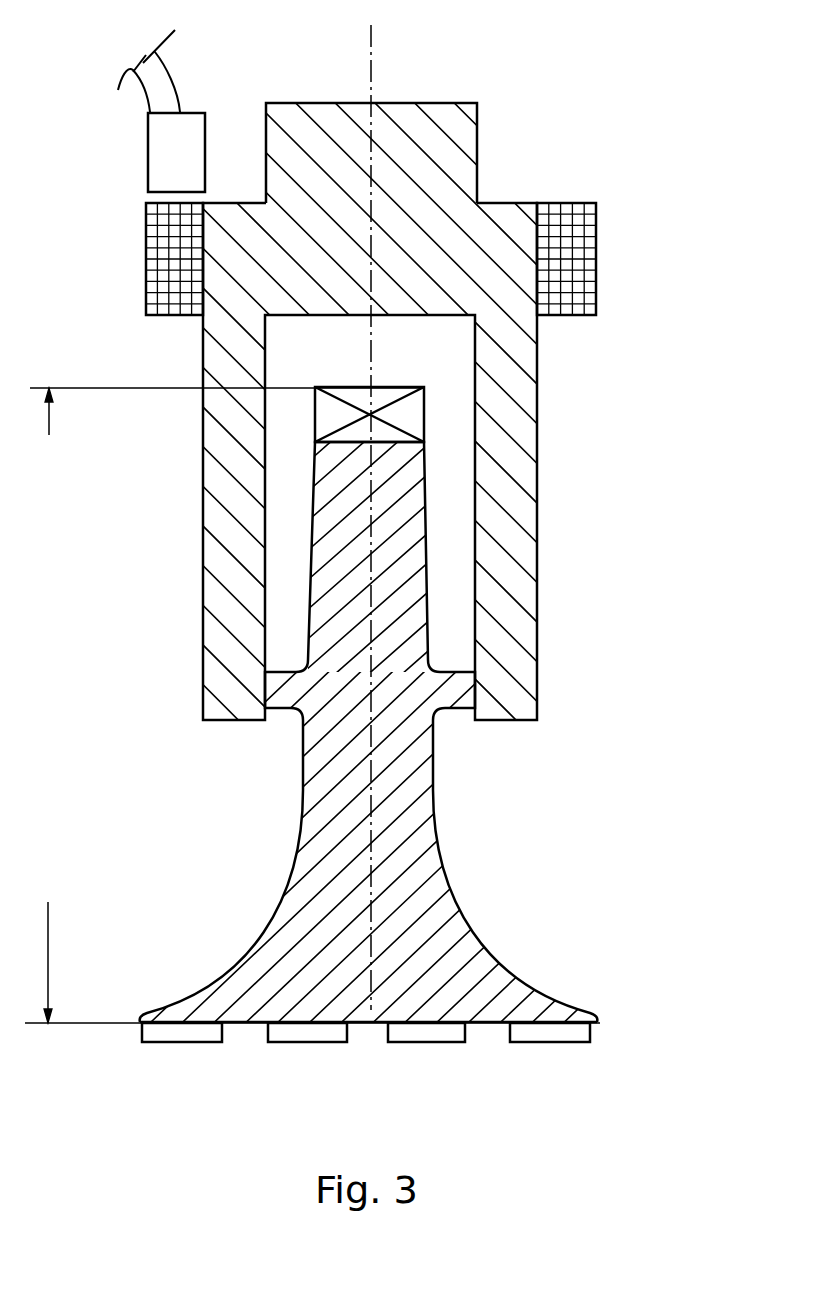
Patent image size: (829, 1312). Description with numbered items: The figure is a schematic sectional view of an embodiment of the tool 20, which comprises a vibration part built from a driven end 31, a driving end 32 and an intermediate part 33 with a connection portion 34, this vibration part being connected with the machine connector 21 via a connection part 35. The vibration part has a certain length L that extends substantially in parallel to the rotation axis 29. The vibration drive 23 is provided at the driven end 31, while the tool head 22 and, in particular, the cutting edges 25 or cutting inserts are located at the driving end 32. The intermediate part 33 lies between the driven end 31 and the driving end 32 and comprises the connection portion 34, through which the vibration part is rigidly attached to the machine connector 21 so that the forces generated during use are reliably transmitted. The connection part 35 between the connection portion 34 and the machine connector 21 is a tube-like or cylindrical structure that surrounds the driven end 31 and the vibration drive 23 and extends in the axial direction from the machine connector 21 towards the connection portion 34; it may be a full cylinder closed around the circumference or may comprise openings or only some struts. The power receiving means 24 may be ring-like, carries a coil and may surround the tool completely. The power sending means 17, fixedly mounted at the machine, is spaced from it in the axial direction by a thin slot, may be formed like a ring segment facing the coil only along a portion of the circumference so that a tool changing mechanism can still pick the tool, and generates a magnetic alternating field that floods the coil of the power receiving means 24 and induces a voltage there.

The power sending means 17 is at (155, 152).
The electromagnetic actuator 20 is at (182, 568).
The machine connector 21 is at (463, 131).
The tool head 22 is at (542, 973).
The vibration drive 23 is at (413, 422).
The power receiving means 24 is at (580, 243).
The cutting edges 25 is at (536, 1042).
The rotation axis 29 is at (372, 48).
The driven end 31 is at (388, 455).
The driving end 32 is at (374, 1003).
The intermediate part 33 is at (373, 698).
The connection portion 34 is at (473, 690).
The connection part 35 is at (523, 547).
The length L is at (312, 705).